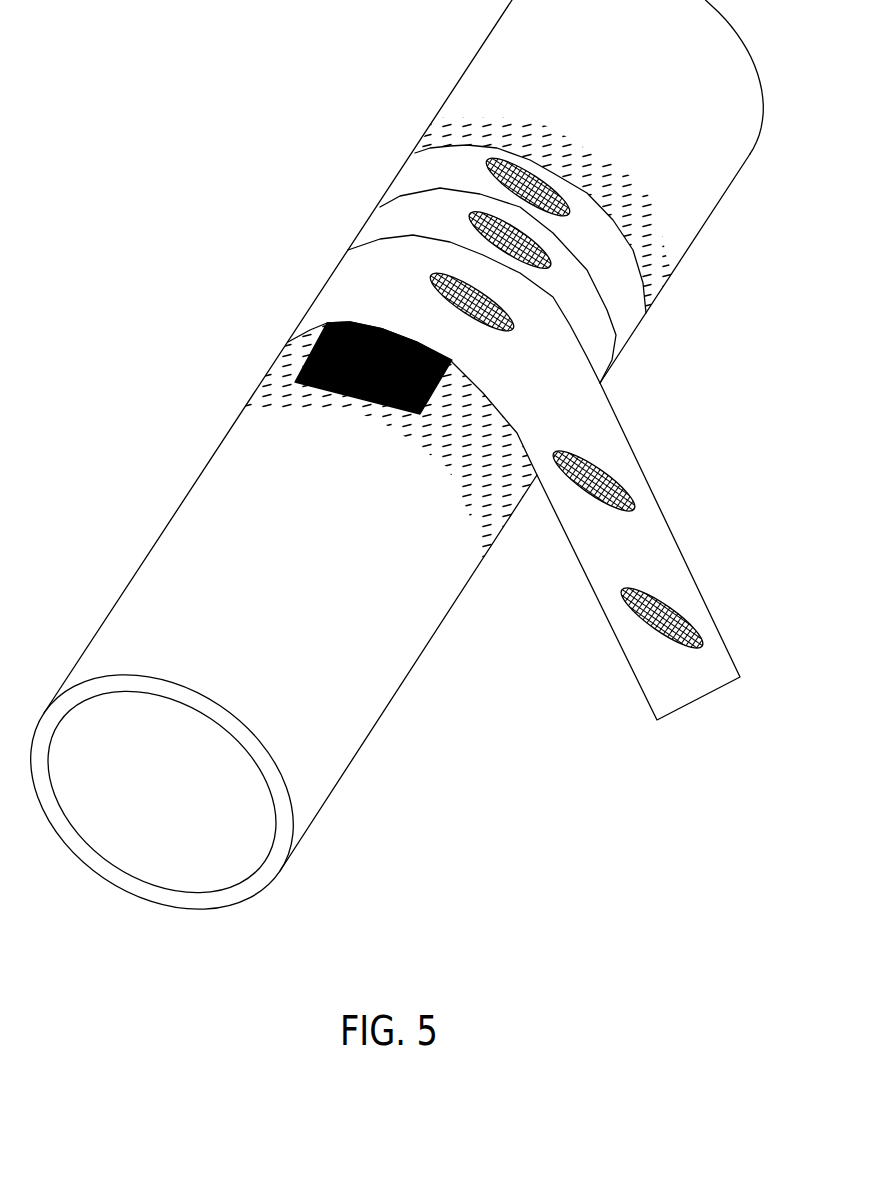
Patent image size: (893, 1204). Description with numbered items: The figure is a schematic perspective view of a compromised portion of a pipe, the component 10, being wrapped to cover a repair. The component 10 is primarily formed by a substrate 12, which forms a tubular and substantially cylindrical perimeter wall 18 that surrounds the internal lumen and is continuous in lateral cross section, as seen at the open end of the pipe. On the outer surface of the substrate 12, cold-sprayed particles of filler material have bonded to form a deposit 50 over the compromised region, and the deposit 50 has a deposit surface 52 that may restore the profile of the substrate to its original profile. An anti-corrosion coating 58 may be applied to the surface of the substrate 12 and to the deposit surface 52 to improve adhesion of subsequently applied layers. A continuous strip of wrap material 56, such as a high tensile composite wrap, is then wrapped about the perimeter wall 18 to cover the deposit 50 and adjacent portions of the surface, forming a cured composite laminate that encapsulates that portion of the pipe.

The component 10 is at (381, 479).
The substrate 12 is at (366, 686).
The perimeter wall 18 is at (129, 884).
The deposit 50 is at (300, 372).
The deposit surface 52 is at (327, 325).
The wrap material 56 is at (675, 537).
The anti-corrosion coating 58 is at (477, 532).